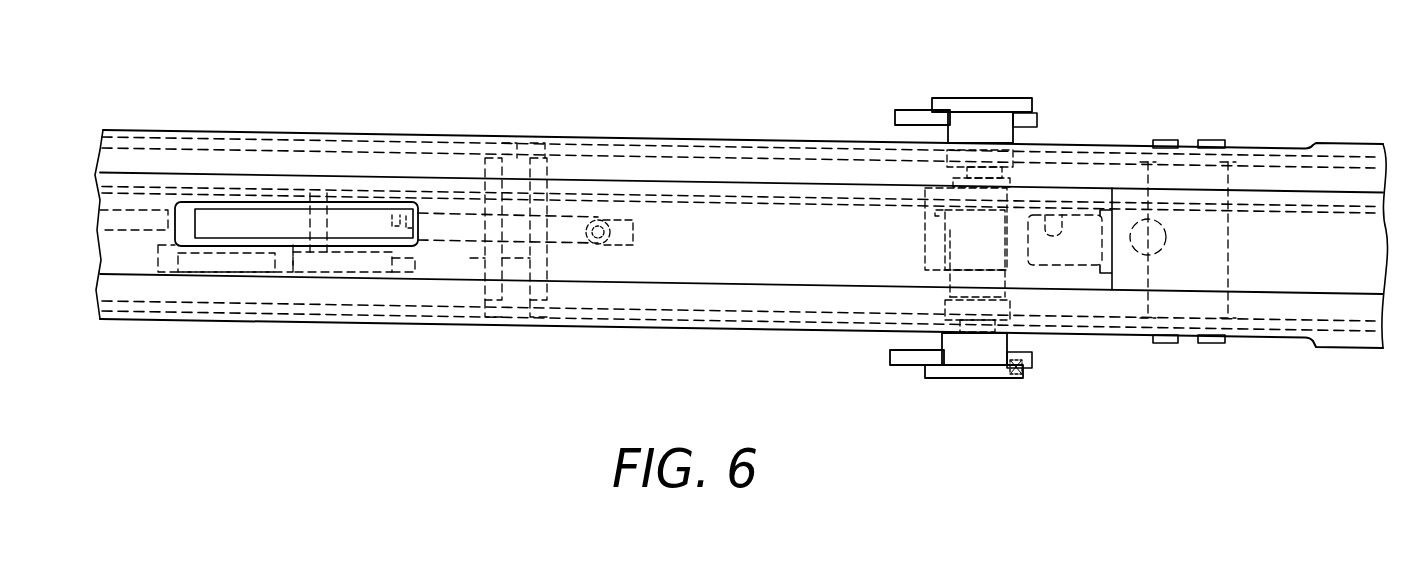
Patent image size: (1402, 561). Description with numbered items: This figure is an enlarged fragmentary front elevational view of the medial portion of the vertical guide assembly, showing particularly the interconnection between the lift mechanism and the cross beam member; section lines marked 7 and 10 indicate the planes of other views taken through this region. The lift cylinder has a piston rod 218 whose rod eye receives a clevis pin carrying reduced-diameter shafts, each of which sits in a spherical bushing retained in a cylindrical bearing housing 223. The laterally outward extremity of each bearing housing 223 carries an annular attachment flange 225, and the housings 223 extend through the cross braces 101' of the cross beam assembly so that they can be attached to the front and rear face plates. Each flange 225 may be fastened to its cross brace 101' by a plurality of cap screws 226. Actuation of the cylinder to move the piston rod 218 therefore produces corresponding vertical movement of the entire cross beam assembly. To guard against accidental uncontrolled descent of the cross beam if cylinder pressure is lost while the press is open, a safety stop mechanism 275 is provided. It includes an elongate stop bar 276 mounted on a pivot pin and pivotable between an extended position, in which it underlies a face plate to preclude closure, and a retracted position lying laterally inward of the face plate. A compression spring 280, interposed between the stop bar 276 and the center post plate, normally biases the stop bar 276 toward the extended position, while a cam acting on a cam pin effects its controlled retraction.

The section line 10- 10 is at (142, 240).
The section line 7- 7 is at (980, 90).
The safety stop mechanism 275 is at (284, 198).
The stop bar 276 is at (352, 223).
The compression spring 280 is at (598, 217).
The cross brace 101' is at (856, 228).
The bearing housing 223 is at (1002, 138).
The annular attachment flange 225 is at (1017, 100).
The cap screw 226 is at (1014, 380).
The piston rod 218 is at (1080, 213).